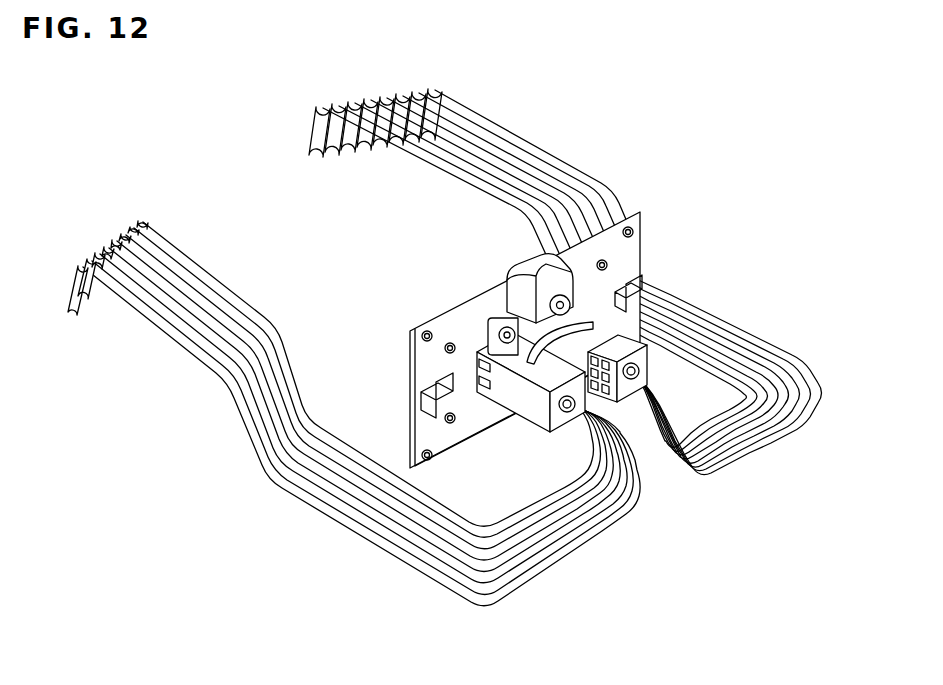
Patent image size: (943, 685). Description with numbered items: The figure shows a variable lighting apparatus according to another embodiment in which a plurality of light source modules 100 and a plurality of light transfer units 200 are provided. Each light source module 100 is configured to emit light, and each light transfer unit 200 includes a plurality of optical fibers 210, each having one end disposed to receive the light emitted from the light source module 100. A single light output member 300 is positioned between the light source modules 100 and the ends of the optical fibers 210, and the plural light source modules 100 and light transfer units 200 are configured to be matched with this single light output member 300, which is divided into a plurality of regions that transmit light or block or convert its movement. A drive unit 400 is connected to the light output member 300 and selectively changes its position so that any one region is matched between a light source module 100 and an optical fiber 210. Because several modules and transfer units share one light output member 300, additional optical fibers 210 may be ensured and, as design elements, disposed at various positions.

The light source module 100 is at (461, 299).
The light transfer unit 200 is at (441, 366).
The optical fiber 210 is at (773, 447).
The light output member 300 is at (600, 312).
The drive unit 400 is at (535, 267).